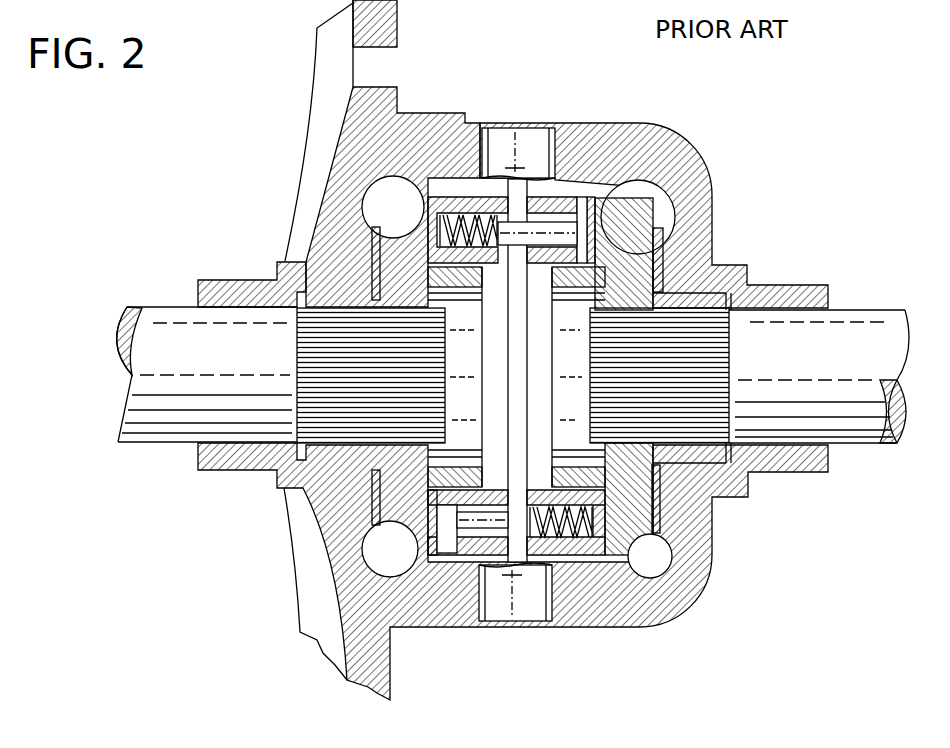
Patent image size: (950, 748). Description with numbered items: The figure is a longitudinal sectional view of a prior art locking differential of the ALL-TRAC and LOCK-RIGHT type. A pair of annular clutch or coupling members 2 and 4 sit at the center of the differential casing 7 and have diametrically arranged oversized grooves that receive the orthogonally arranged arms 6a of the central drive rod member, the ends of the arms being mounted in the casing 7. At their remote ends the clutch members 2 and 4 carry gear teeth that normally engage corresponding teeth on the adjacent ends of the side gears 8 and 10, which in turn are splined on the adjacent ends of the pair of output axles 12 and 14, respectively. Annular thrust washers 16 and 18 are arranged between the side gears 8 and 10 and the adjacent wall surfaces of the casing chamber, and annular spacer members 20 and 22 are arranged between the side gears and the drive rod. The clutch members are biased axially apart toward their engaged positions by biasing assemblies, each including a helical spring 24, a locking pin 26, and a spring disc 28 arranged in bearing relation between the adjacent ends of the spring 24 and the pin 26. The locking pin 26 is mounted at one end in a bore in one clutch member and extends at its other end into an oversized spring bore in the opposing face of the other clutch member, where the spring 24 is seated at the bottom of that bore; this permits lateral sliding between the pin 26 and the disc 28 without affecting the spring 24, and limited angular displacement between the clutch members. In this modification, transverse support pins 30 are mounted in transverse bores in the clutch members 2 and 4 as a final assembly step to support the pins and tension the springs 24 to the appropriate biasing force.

The annular clutch member 2 is at (426, 184).
The annular clutch member 4 is at (531, 195).
The arm 6a is at (506, 142).
The differential casing 7 is at (652, 148).
The side gear 8 is at (363, 202).
The side gear 10 is at (662, 258).
The output axle 12 is at (143, 304).
The output axle 14 is at (856, 317).
The annular thrust washer 16 is at (374, 236).
The annular thrust washer 18 is at (662, 500).
The annular spacer member 20 is at (377, 478).
The annular spacer member 22 is at (600, 522).
The helical spring 24 is at (438, 228).
The locking pin 26 is at (554, 228).
The spring disc 28 is at (480, 200).
The transverse support pin 30 is at (592, 203).